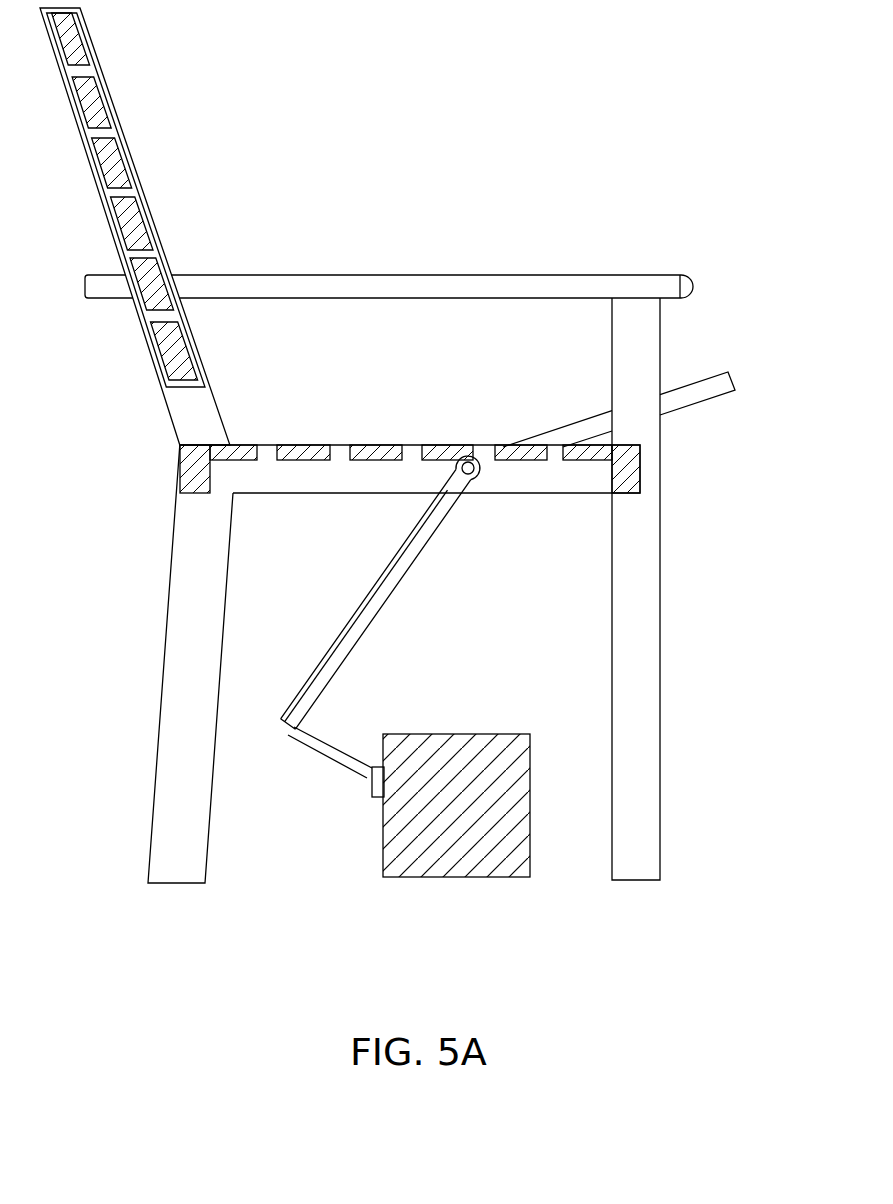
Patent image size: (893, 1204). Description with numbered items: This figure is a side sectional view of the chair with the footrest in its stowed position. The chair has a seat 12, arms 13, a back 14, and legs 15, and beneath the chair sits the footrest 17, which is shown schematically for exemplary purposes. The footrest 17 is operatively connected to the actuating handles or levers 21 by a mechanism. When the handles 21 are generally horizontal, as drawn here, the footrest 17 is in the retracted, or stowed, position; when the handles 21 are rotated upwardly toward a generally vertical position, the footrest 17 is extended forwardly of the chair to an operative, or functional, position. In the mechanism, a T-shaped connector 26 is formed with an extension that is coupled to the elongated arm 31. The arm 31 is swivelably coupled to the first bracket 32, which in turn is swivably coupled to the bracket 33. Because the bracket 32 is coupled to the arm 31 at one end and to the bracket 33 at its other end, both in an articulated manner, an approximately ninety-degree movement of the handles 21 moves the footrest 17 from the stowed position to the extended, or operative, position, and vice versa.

The seat 12 is at (340, 482).
The arms 13 is at (446, 278).
The back 14 is at (113, 130).
The legs 15 is at (177, 637).
The footrest 17 is at (472, 745).
The actuating handles or levers 21 is at (722, 376).
The T-shaped connector 26 is at (472, 482).
The elongated arm 31 is at (378, 602).
The first bracket 32 is at (330, 743).
The bracket 33 is at (374, 797).